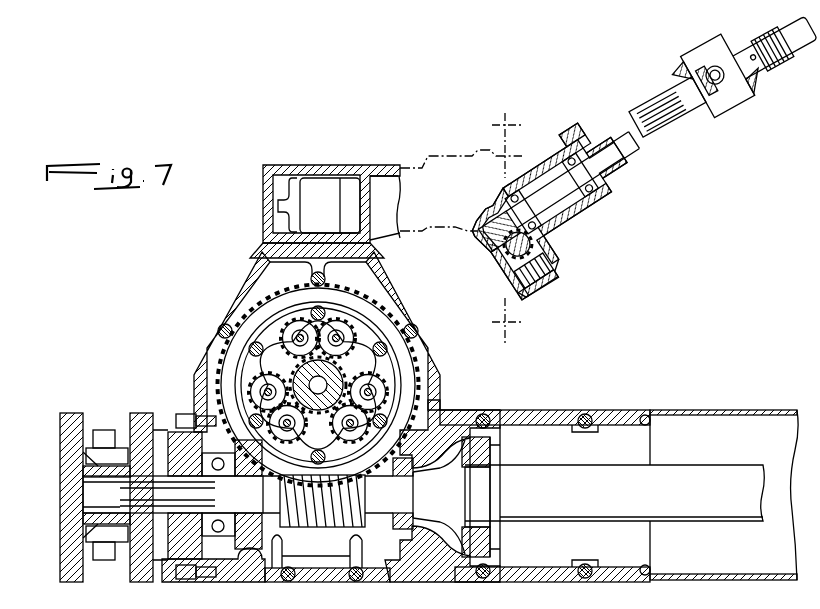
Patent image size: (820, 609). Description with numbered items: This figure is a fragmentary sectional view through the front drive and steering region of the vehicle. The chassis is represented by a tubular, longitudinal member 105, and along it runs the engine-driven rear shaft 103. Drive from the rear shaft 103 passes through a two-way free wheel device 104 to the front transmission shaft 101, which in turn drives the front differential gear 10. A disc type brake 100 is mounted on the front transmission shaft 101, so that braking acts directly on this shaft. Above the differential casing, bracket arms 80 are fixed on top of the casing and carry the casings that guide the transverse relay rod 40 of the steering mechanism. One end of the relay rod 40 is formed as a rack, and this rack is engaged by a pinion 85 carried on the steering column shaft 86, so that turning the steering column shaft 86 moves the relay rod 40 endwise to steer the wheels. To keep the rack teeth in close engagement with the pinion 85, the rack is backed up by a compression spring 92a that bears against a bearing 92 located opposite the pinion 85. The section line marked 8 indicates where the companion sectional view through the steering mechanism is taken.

The front differential gear 10 is at (278, 297).
The disc type brake 100 is at (60, 435).
The front transmission shaft 101 is at (161, 486).
The rear shaft 103 is at (711, 473).
The two-way free wheel device 104 is at (492, 452).
The tubular longitudinal member 105 is at (778, 412).
The bracket arms 80 is at (461, 183).
The pinion 85 is at (487, 250).
The steering column shaft 86 is at (618, 134).
The transverse relay rod 40 is at (512, 262).
The bearing 92 is at (522, 281).
The compression spring 92a is at (556, 256).
The section line 8- 8 is at (500, 229).